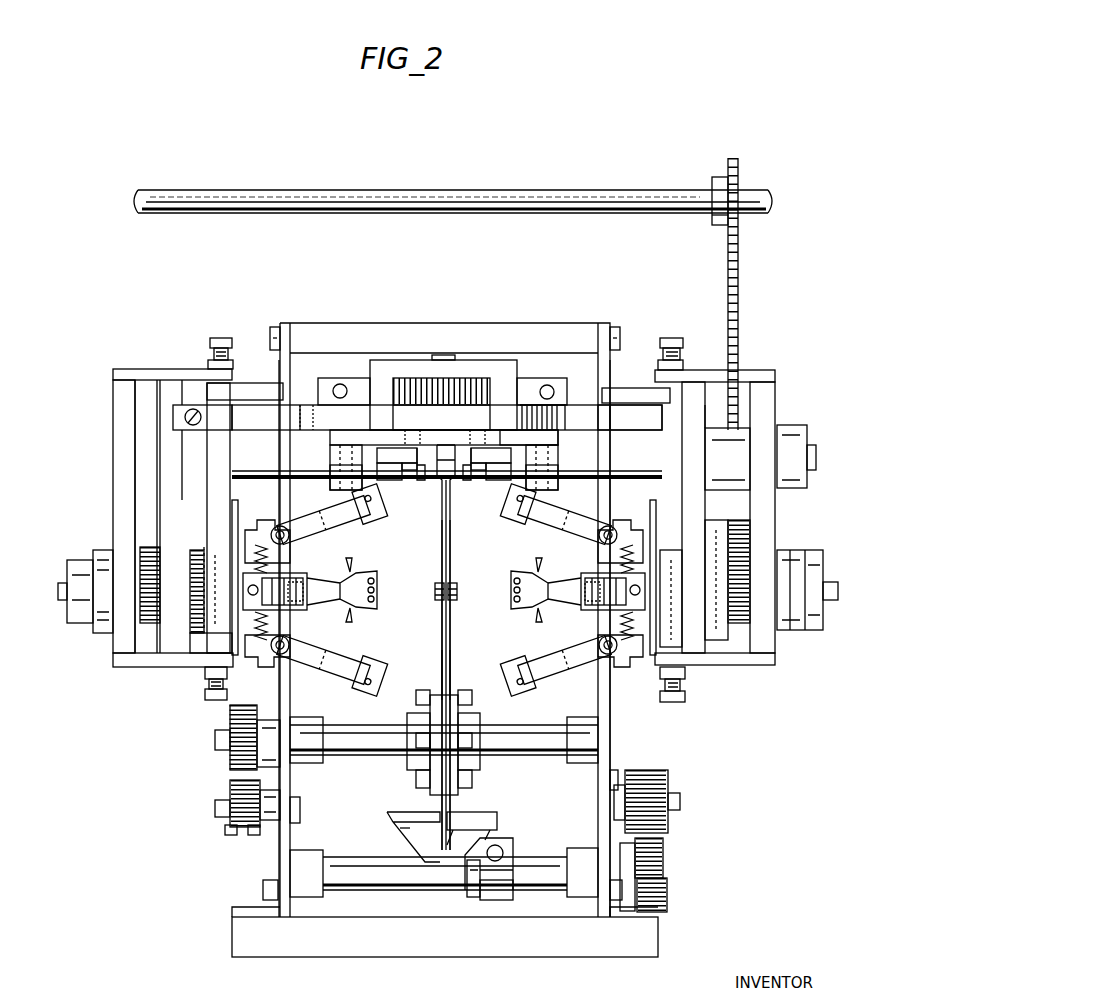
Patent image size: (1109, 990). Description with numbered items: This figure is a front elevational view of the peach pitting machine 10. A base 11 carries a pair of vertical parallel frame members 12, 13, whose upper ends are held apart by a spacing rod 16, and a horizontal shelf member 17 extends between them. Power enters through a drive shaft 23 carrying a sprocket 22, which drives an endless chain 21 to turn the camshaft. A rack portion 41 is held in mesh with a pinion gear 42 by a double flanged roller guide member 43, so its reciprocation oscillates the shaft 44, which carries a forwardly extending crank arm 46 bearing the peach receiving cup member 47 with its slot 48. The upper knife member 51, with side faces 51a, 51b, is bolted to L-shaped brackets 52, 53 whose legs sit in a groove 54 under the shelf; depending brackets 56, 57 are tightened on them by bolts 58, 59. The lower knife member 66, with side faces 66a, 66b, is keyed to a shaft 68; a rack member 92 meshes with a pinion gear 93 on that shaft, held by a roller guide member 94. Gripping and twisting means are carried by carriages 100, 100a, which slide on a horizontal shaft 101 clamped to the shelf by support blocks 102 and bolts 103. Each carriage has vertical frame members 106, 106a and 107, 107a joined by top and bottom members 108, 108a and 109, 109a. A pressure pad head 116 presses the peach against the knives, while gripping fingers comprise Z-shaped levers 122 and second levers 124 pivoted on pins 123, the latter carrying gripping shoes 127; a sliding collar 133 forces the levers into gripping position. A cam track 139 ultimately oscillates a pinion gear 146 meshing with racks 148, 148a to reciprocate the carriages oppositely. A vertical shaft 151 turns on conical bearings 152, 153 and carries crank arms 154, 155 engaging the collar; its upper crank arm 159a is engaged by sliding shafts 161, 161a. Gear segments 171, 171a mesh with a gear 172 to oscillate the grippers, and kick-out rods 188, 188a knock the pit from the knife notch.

The peach pitting machine 10 is at (145, 748).
The base 11 is at (368, 958).
The frame member 12 is at (290, 838).
The frame member 13 is at (600, 838).
The spacing rod 16 is at (568, 332).
The shelf member 17 is at (552, 438).
The endless chain 21 is at (741, 294).
The sprocket 22 is at (740, 186).
The power drive shaft 23 is at (656, 198).
The rack portion 41 is at (665, 845).
The pinion gear 42 is at (665, 906).
The double flanged roller guide member 43 is at (670, 775).
The shaft 44 is at (557, 862).
The crank arm 46 is at (475, 900).
The peach receiving cup member 47 is at (500, 842).
The slot 48 is at (452, 814).
The upper knife member 51 is at (441, 540).
The side face 51a is at (440, 568).
The side face 51b is at (451, 568).
The L-shaped bracket 52 is at (440, 505).
The L-shaped bracket 53 is at (452, 500).
The groove 54 is at (474, 440).
The depending bracket 56 is at (368, 480).
The depending bracket 57 is at (495, 480).
The bolt 58 is at (418, 480).
The bolt 59 is at (476, 480).
The lower knife member 66 is at (441, 632).
The side face 66a is at (440, 665).
The side face 66b is at (452, 665).
The shaft 68 is at (343, 750).
The rack member 92 is at (232, 782).
The pinion gear 93 is at (232, 728).
The double flanged roller guide member 94 is at (242, 833).
The carriage 100 is at (170, 519).
The carriage 100a is at (720, 502).
The horizontal shaft 101 is at (324, 485).
The support block 102 is at (332, 473).
The bolt 103 is at (336, 454).
The carriage frame member 106 is at (122, 404).
The carriage frame member 106a is at (722, 656).
The carriage frame member 107 is at (190, 437).
The carriage frame member 107a is at (782, 650).
The carriage frame member 108 is at (188, 374).
The carriage frame member 108a is at (757, 374).
The carriage frame member 109 is at (158, 667).
The carriage frame member 109a is at (750, 667).
The pressure pad head 116 is at (348, 570).
The Z-shaped lever 122 is at (286, 612).
The pin 123 is at (288, 556).
The second lever 124 is at (318, 655).
The peach gripping shoe 127 is at (364, 628).
The collar 133 is at (234, 514).
The cam track 139 is at (270, 392).
The pinion gear 146 is at (446, 398).
The rack 148 is at (268, 418).
The rack 148a is at (655, 422).
The shaft 151 is at (218, 504).
The conical bearing 152 is at (230, 353).
The conical bearing 153 is at (228, 685).
The crank arm 154 is at (202, 540).
The crank arm 155 is at (202, 656).
The crank arm 159a is at (644, 392).
The shaft 161 is at (350, 372).
The shaft 161a is at (572, 372).
The gear segment 171 is at (150, 535).
The gear segment 171a is at (742, 500).
The gear 172 is at (142, 617).
The kick-out rod 188 is at (434, 596).
The kick-out rod 188a is at (456, 596).